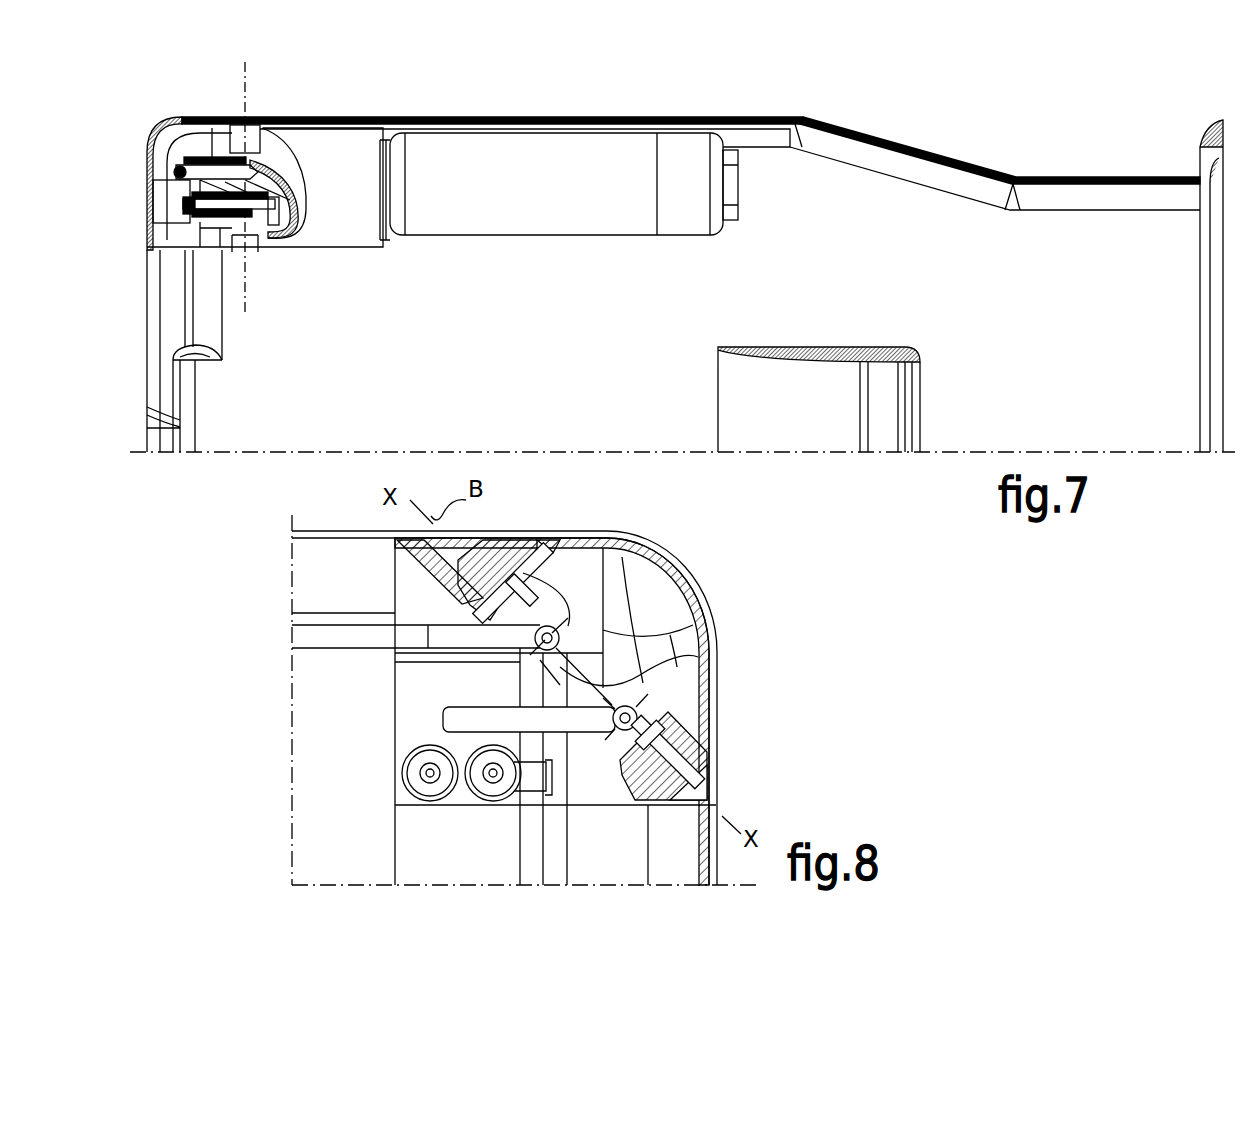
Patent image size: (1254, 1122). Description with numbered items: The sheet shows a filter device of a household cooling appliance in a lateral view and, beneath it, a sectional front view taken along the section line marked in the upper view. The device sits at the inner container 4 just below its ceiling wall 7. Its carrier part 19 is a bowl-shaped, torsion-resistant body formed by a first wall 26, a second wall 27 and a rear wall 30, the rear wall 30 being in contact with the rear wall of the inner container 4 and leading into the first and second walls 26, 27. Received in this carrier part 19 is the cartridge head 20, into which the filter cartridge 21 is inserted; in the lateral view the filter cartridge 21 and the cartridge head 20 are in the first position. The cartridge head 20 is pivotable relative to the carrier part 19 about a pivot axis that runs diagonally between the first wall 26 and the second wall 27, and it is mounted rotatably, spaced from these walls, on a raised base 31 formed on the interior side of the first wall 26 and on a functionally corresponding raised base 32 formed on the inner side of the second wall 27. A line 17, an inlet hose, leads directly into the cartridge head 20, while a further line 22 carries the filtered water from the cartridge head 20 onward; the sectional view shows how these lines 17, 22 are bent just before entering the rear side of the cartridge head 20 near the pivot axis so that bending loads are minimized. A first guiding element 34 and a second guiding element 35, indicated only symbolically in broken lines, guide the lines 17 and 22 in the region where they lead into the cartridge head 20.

In FIG. 7, the inner container 4 is at (942, 145).
In FIG. 7, the ceiling wall 7 is at (573, 115).
In FIG. 7, the line 17 is at (190, 163).
In FIG. 8, the line 17 is at (292, 640).
In FIG. 8, the carrier part 19 is at (481, 815).
In FIG. 7, the cartridge head 20 is at (358, 155).
In FIG. 7, the filter cartridge 21 is at (545, 210).
In FIG. 7, the line 22 is at (185, 207).
In FIG. 8, the line 22 is at (450, 718).
In FIG. 7, the first wall 26 is at (340, 117).
In FIG. 8, the first wall 26 is at (575, 531).
In FIG. 7, the second wall 27 is at (213, 252).
In FIG. 8, the second wall 27 is at (712, 686).
In FIG. 7, the rear wall 30 is at (148, 188).
In FIG. 8, the rear wall 30 is at (415, 676).
In FIG. 8, the raised base 31 is at (427, 563).
In FIG. 8, the raised base 32 is at (703, 762).
In FIG. 7, the first guiding element 34 is at (213, 157).
In FIG. 7, the second guiding element 35 is at (247, 227).